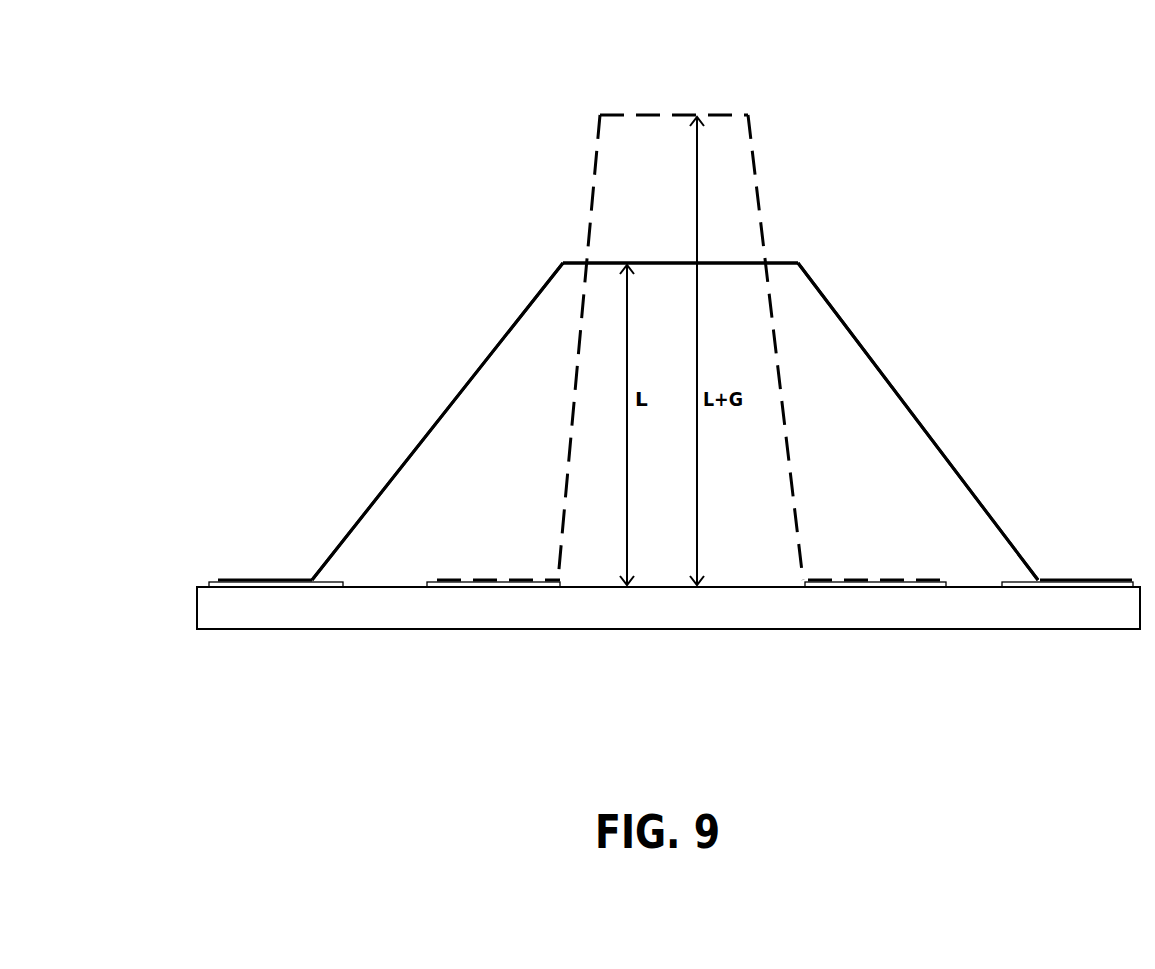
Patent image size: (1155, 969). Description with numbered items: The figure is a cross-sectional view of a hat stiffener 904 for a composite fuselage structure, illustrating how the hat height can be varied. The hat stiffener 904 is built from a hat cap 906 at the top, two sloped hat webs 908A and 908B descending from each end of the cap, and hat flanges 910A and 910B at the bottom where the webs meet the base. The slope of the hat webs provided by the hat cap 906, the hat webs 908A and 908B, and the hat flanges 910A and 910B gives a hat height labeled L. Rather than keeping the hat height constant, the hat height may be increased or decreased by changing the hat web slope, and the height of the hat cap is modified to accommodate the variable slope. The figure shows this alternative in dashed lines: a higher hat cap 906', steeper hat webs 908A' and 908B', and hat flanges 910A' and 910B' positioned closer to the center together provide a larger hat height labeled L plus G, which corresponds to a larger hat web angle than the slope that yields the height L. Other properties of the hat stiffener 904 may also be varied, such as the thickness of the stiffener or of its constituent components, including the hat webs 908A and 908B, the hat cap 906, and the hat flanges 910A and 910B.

The hat stiffener 904 is at (543, 174).
The hat cap 906 is at (708, 242).
The hat cap 906' is at (701, 92).
The hat web 908A is at (437, 421).
The hat web 908B is at (918, 421).
The hat web 908A' is at (541, 347).
The hat web 908B' is at (808, 347).
The hat flange 910A is at (254, 566).
The hat flange 910B is at (1077, 566).
The hat flange 910A' is at (492, 553).
The hat flange 910B' is at (881, 554).